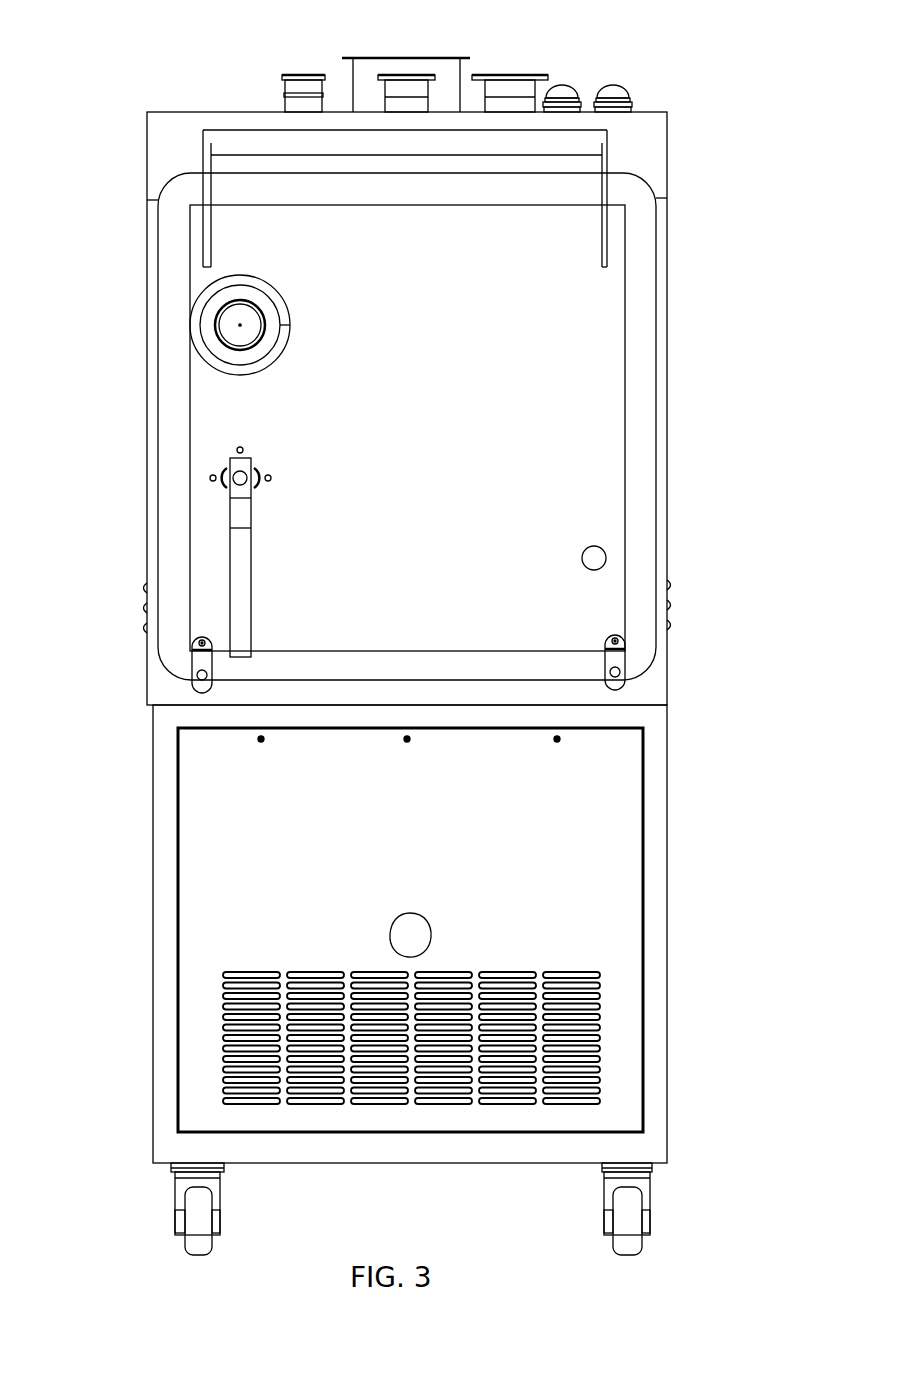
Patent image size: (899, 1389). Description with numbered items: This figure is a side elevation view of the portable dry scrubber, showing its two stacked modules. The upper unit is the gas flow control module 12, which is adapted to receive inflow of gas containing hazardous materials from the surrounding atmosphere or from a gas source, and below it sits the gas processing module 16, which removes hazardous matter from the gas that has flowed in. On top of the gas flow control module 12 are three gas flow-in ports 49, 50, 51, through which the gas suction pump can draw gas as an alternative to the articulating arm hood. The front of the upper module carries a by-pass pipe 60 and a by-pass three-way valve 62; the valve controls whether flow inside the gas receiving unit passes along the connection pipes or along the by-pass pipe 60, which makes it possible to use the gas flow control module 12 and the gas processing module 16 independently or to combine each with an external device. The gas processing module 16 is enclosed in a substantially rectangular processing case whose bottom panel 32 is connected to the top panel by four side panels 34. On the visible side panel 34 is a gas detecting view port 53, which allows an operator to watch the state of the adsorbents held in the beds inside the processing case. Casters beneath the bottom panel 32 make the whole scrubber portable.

The gas flow control module 12 is at (670, 376).
The gas processing module 16 is at (670, 851).
The bottom panel 32 is at (523, 1165).
The side panel 34 is at (165, 1108).
The gas flow-in port 49 is at (512, 75).
The gas flow-in port 50 is at (405, 75).
The gas flow-in port 51 is at (300, 75).
The gas detecting view port 53 is at (430, 930).
The by-pass pipe 60 is at (215, 370).
The by-pass 3 way valve 62 is at (230, 577).